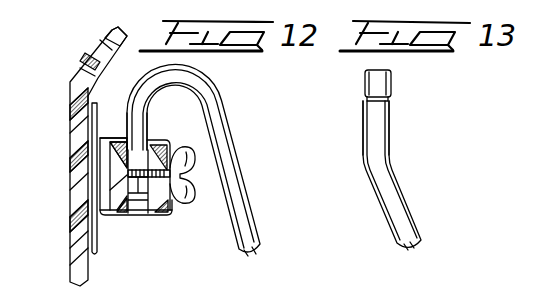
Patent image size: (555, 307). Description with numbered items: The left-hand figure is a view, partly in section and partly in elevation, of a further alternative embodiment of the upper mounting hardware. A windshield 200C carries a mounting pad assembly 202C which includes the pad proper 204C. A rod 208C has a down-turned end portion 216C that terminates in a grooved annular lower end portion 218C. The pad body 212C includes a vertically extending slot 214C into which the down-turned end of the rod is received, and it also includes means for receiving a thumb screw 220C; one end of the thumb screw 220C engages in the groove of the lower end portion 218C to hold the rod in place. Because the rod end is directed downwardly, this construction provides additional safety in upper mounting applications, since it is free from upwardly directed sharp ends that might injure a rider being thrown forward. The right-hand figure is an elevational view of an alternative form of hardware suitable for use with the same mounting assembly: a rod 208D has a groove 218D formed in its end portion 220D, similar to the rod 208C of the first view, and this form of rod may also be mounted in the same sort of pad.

In FIG. 12, the windshield 200C is at (82, 68).
In FIG. 12, the mounting pad assembly 202C is at (188, 245).
In FIG. 12, the pad proper 204C is at (133, 21).
In FIG. 12, the rod 208C is at (237, 158).
In FIG. 12, the pad body 212C is at (100, 138).
In FIG. 12, the vertically extending slot 214C is at (128, 210).
In FIG. 12, the down-turned end portion 216C is at (138, 127).
In FIG. 12, the grooved annular lower end portion 218C is at (135, 222).
In FIG. 12, the thumb screw 220C is at (176, 194).
In FIG. 13, the rod 208D is at (398, 212).
In FIG. 13, the groove 218D is at (388, 96).
In FIG. 13, the end portion 220D is at (384, 84).